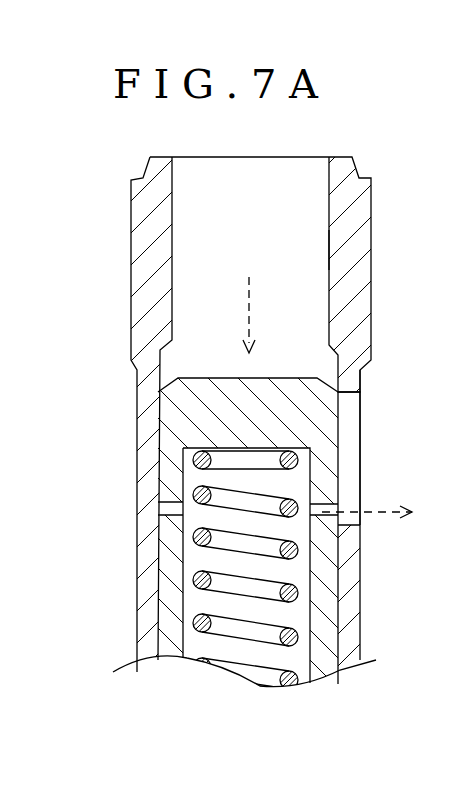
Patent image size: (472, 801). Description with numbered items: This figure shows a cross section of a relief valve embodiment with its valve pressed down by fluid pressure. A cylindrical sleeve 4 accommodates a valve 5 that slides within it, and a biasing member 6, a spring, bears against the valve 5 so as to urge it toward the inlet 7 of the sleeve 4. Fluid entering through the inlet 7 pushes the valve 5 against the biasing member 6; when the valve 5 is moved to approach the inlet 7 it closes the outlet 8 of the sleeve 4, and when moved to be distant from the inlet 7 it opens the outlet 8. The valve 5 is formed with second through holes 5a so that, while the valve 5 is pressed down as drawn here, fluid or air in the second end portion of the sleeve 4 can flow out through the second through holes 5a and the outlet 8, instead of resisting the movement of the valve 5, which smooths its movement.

The sleeve 4 is at (127, 290).
The valve 5 is at (156, 487).
The second through holes 5a is at (322, 515).
The biasing member 6 is at (193, 577).
The inlet 7 is at (328, 266).
The outlet 8 is at (357, 413).